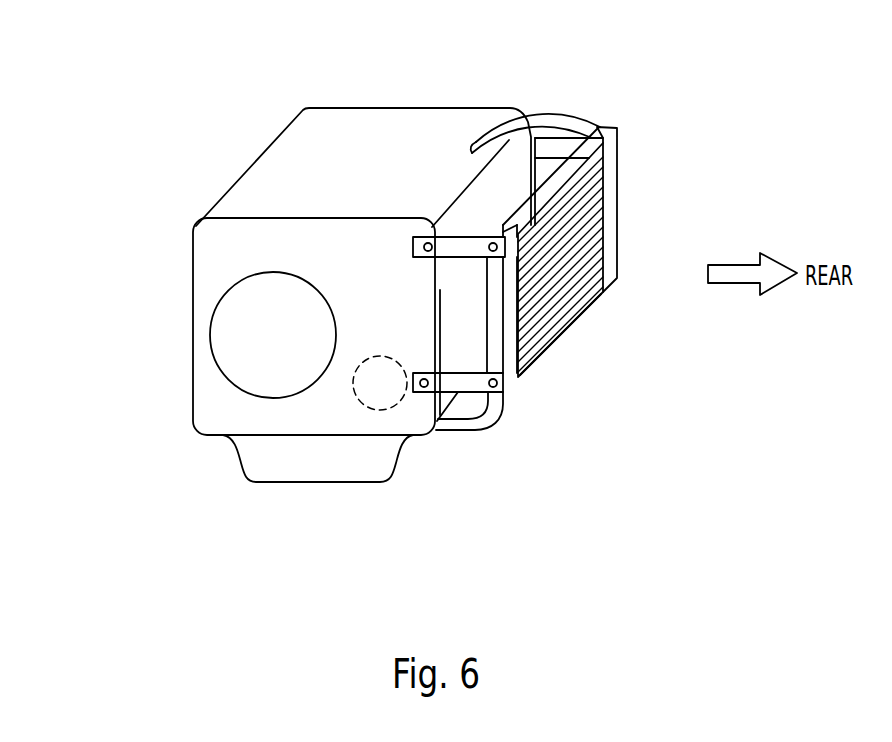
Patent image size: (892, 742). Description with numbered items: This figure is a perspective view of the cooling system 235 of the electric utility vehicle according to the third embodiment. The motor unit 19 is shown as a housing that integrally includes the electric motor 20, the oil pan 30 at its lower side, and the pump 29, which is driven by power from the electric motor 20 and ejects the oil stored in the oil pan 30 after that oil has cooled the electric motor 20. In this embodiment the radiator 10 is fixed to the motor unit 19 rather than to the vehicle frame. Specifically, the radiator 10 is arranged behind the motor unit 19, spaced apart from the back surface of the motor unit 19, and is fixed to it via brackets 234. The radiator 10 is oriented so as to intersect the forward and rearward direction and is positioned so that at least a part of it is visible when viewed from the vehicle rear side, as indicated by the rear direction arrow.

The radiator 10 is at (618, 183).
The motor unit 19 is at (190, 258).
The electric motor 20 is at (209, 342).
The pump 29 is at (355, 398).
The oil pan 30 is at (263, 485).
The brackets 234 is at (462, 237).
The cooling system 235 is at (645, 117).